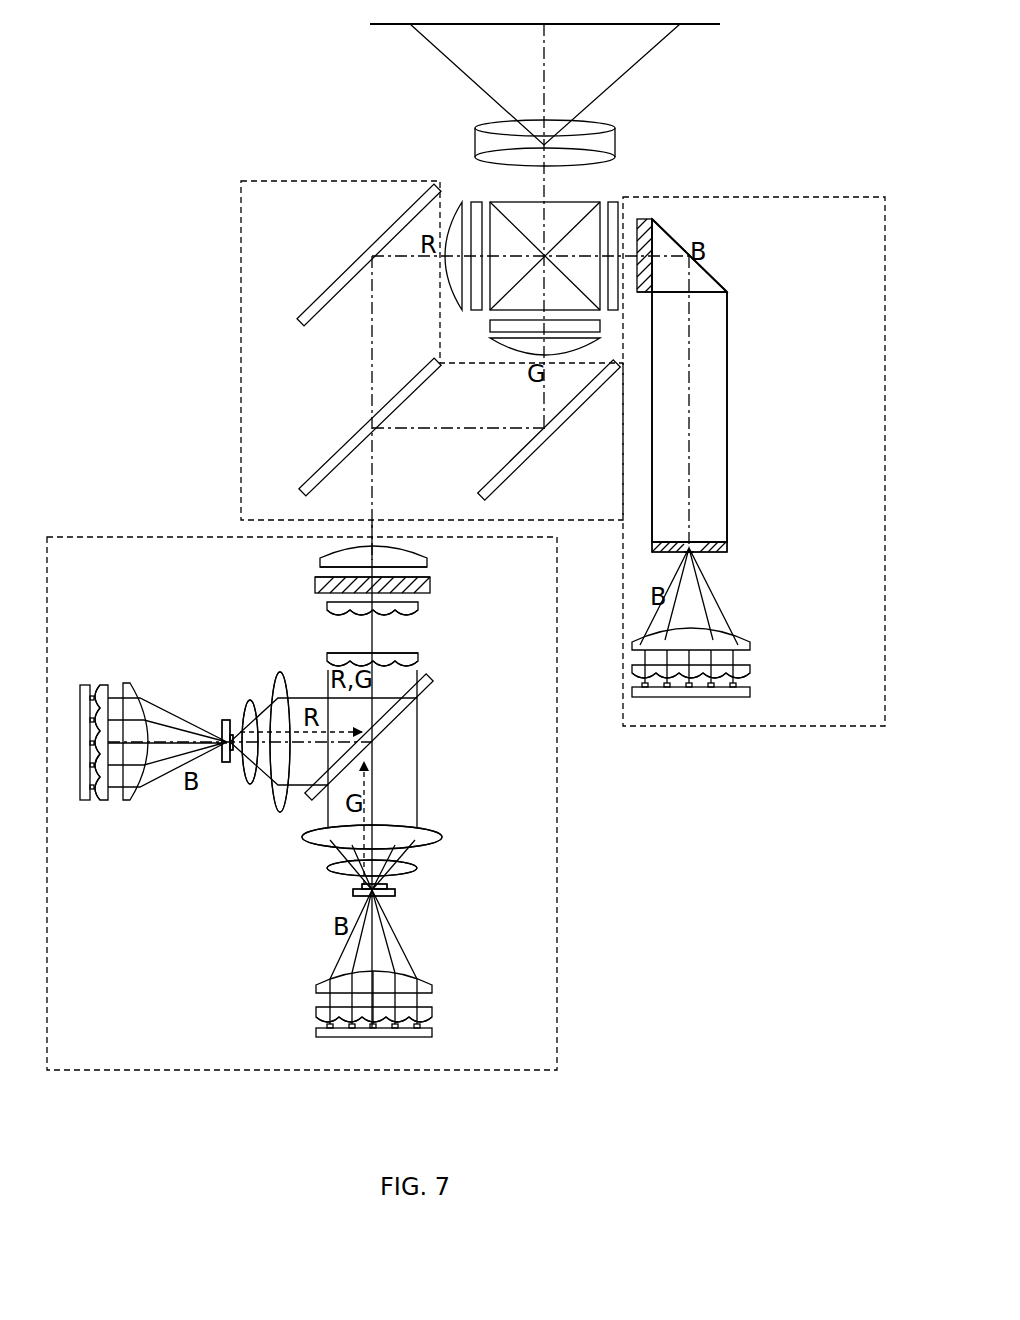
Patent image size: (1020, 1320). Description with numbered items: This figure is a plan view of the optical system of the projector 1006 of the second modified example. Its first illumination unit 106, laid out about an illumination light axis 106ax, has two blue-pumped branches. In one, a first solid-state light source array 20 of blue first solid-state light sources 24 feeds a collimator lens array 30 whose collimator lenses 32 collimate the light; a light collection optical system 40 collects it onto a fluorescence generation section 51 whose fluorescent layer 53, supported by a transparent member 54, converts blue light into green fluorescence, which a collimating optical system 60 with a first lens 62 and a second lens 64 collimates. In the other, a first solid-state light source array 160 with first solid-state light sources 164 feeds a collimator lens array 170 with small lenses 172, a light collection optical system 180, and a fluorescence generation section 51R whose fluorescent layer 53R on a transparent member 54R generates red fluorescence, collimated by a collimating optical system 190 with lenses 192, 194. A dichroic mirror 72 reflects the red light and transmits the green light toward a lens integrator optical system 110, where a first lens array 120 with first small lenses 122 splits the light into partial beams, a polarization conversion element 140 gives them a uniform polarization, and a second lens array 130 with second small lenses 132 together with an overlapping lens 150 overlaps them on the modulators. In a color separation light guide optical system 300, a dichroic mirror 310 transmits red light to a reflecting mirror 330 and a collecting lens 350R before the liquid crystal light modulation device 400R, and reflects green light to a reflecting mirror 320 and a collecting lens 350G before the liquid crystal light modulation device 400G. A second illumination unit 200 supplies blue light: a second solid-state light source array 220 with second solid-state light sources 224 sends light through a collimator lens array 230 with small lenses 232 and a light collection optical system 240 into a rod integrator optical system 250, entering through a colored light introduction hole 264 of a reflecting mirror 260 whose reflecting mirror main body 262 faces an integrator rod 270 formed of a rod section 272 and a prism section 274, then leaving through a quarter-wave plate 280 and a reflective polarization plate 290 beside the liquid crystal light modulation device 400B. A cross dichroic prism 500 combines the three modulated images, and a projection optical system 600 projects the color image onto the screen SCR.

The projector 1006 is at (872, 42).
The screen SCR is at (707, 26).
The projection optical system 600 is at (474, 140).
The cross dichroic prism 500 is at (598, 202).
The liquid crystal light modulation device 400R is at (476, 203).
The collecting lens 350R is at (455, 203).
The liquid crystal light modulation device 400B is at (614, 202).
The liquid crystal light modulation device 400G is at (490, 325).
The collecting lens 350G is at (490, 345).
The color separation light guide optical system 300 is at (240, 383).
The reflecting mirror 330 is at (320, 300).
The dichroic mirror 310 is at (340, 455).
The reflecting mirror 320 is at (525, 470).
The second illumination unit 200 is at (785, 727).
The rod integrator optical system 250 is at (829, 203).
The reflective polarization plate 290 is at (645, 220).
The quarter-wave plate 280 is at (660, 222).
The prism section 274 is at (700, 266).
The rod section 272 is at (727, 362).
The integrator rod 270 is at (781, 262).
The reflecting mirror 260 is at (784, 533).
The reflecting mirror main body 262 is at (727, 546).
The colored light introduction hole 264 is at (700, 552).
The light collection optical system 240 is at (750, 645).
The collimator lens array 230 is at (755, 668).
The small lens 232 is at (745, 680).
The second solid-state light sources 224 is at (752, 686).
The second solid-state light source array 220 is at (755, 692).
The first illumination unit 106 is at (465, 1072).
The illumination optical axis 106ax is at (372, 533).
The lens integrator optical system 110 is at (502, 540).
The overlapping lens 150 is at (427, 565).
The polarization conversion element 140 is at (430, 585).
The second lens array 130 is at (418, 606).
The second small lenses 132 is at (330, 612).
The first lens array 120 is at (418, 657).
The first small lenses 122 is at (330, 660).
The first solid-state light source array 160 is at (85, 802).
The first solid-state light sources 164 is at (90, 700).
The collimator lens array 170 is at (105, 802).
The small lens 172 is at (100, 690).
The light collection optical system 180 is at (128, 802).
The fluorescence generation section 51R is at (255, 654).
The substrate 54R is at (225, 720).
The fluorescent layer 53R is at (232, 735).
The collimating optical system 190 is at (295, 860).
The first lens 192 is at (248, 785).
The second lens 194 is at (280, 812).
The dichroic mirror 72 is at (430, 683).
The collimating optical system 60 is at (494, 820).
The second lens 64 is at (442, 837).
The first lens 62 is at (417, 868).
The fluorescence generation section 51 is at (467, 882).
The fluorescent layer 53 is at (388, 886).
The transparent member 54 is at (395, 894).
The light collection optical system 40 is at (432, 990).
The collimator lens array 30 is at (438, 1010).
The collimator lenses 32 is at (320, 1016).
The first solid-state light sources 24 is at (320, 1027).
The first solid-state light source array 20 is at (438, 1032).